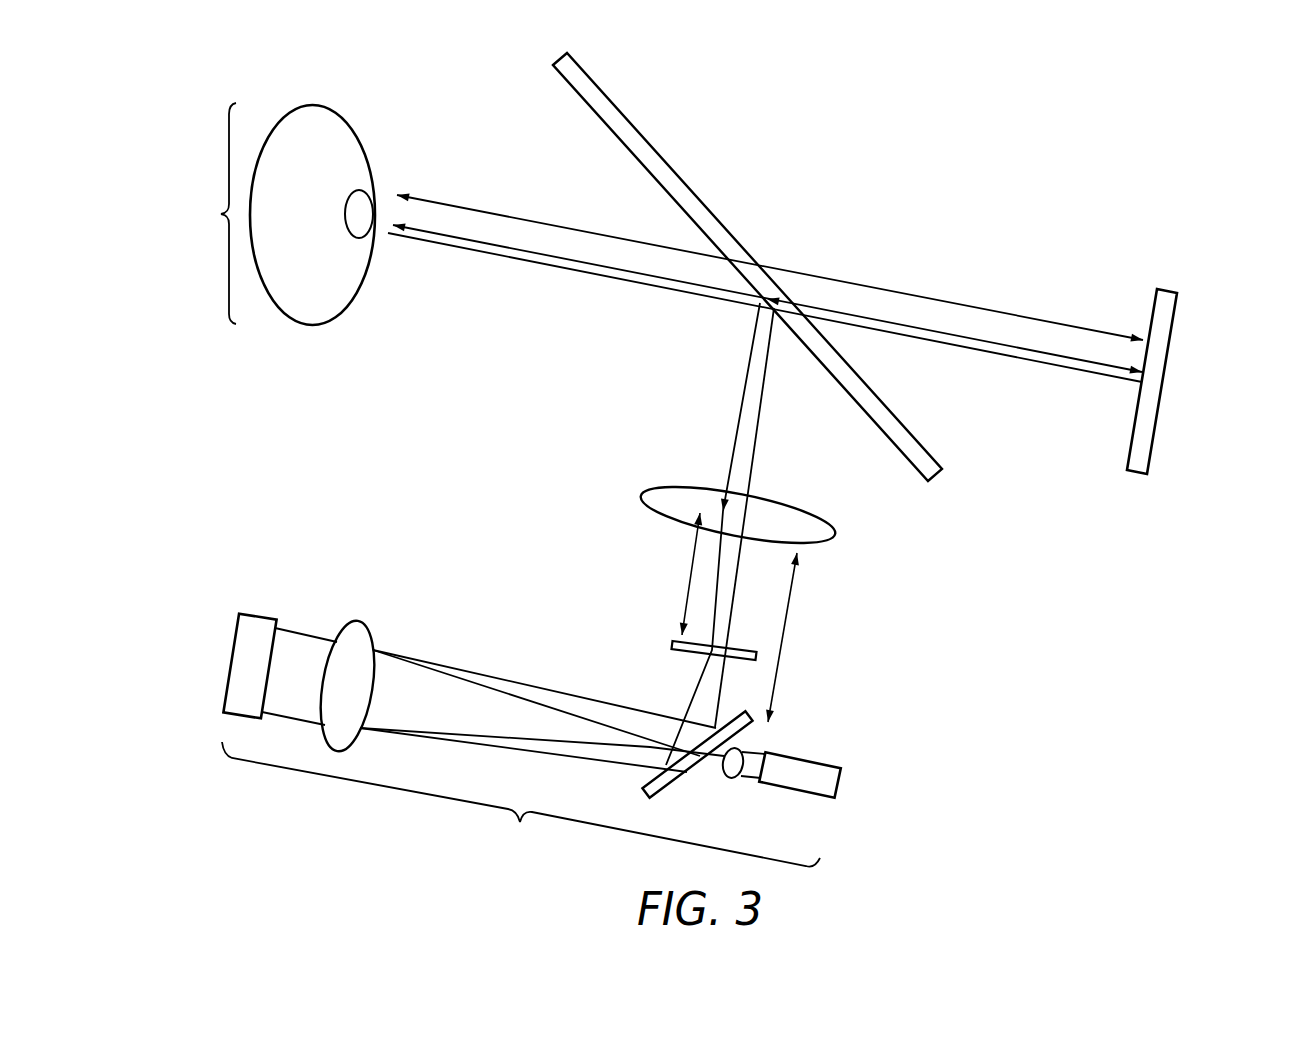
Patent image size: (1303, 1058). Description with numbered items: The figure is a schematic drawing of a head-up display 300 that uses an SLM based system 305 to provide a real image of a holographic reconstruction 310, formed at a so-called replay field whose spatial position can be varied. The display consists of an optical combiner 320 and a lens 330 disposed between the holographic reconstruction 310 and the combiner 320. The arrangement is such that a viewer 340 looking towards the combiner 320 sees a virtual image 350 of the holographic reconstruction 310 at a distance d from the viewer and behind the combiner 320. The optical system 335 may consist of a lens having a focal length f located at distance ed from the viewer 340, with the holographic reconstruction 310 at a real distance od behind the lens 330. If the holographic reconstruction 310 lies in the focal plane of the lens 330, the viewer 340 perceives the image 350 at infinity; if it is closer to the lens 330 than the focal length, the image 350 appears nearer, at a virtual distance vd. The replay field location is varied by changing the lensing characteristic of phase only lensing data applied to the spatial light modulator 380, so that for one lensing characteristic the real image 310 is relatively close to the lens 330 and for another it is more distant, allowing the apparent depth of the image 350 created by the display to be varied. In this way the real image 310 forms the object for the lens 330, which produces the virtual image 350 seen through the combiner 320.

The head-up display 300 is at (976, 90).
The SLM based system 305 is at (498, 740).
The holographic reconstruction 310 is at (671, 642).
The optical combiner 320 is at (579, 61).
The lens 330 is at (641, 491).
The optical system 335 is at (275, 185).
The viewer 340 is at (313, 104).
The virtual image 350 is at (1178, 304).
The spatial light modulator 380 is at (226, 690).